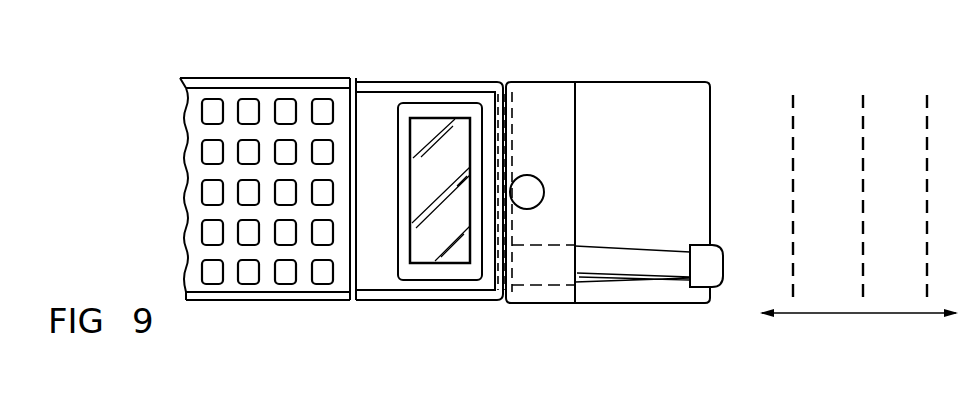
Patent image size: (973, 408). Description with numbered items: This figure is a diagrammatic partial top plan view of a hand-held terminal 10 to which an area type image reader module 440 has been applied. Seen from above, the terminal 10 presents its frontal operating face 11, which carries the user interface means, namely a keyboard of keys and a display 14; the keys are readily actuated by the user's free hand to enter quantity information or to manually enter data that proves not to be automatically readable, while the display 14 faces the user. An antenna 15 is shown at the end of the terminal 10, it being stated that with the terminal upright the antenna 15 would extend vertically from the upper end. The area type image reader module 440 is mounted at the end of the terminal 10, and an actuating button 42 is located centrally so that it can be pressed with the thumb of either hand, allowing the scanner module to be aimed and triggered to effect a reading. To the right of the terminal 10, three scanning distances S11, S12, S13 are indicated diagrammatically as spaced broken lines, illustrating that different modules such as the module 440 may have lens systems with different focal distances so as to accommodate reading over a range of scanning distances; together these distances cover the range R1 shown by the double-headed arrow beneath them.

The terminal 10 is at (295, 306).
The frontal operating face 11 is at (194, 132).
The display 14 is at (422, 258).
The antenna 15 is at (612, 278).
The actuating button 42 is at (528, 175).
The area type image reader module 440 is at (645, 83).
The scanning distance S11 is at (797, 177).
The scanning distance S12 is at (866, 177).
The scanning distance S13 is at (931, 177).
The range R1 is at (895, 316).